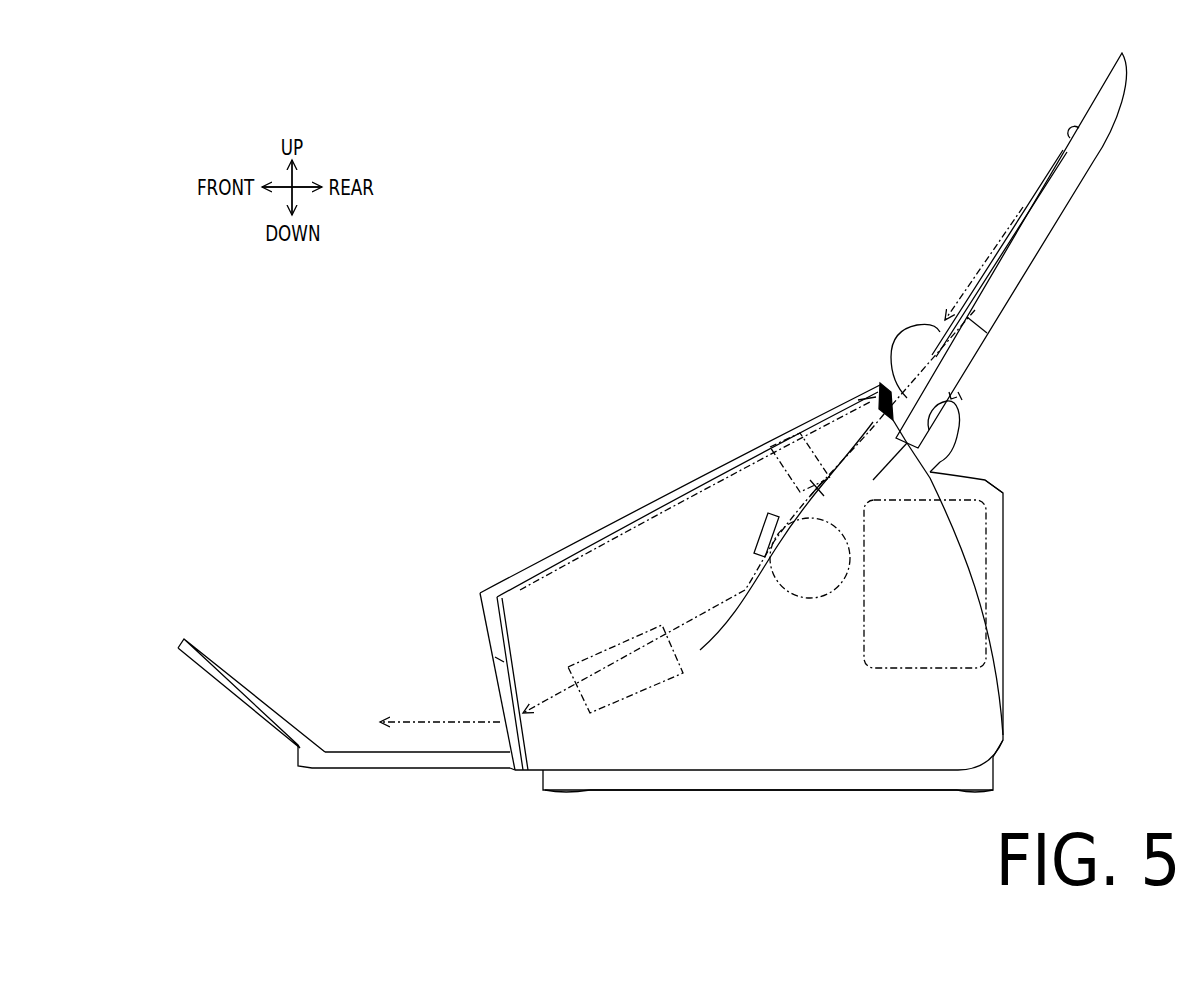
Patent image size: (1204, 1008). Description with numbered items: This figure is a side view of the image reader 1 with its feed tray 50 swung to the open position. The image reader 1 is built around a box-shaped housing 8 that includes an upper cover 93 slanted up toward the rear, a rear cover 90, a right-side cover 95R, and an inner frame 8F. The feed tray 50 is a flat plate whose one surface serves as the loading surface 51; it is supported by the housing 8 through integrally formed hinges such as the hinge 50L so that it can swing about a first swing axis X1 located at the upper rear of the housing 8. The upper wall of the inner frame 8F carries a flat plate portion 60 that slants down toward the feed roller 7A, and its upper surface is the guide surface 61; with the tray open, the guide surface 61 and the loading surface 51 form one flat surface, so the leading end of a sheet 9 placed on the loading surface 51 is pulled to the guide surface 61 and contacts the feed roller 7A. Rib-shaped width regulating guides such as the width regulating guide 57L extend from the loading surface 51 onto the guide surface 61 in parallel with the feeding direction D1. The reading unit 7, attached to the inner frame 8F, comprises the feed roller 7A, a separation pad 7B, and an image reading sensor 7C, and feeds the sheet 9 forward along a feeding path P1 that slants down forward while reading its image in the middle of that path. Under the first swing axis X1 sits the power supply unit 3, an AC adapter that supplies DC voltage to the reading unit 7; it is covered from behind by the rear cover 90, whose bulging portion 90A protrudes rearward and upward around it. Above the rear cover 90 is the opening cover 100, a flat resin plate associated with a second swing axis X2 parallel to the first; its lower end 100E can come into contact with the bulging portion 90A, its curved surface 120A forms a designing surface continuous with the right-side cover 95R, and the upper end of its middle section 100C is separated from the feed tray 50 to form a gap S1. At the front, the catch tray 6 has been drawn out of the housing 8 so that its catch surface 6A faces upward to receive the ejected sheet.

The image reader 1 is at (590, 195).
The power supply unit 3 is at (919, 628).
The catch tray 6 is at (400, 773).
The catch surface 6A is at (268, 705).
The reading unit 7 is at (646, 585).
The feed roller 7A is at (797, 572).
The separation pad 7B is at (722, 522).
The image reading sensor 7C is at (638, 688).
The housing 8 is at (1008, 742).
The inner frame 8F is at (758, 648).
The sheet 9 is at (1050, 118).
The feed tray 50 is at (1098, 165).
The hinge 50L is at (849, 273).
The loading surface 51 is at (1030, 160).
The width regulating guide 57L is at (908, 323).
The flat plate portion 60 is at (737, 403).
The guide surface 61 is at (780, 383).
The rear cover 90 is at (1010, 612).
The bulging portion 90A is at (987, 482).
The upper cover 93 is at (506, 503).
The right-side cover 95R is at (755, 735).
The opening cover 100 is at (952, 443).
The middle section 100C is at (962, 396).
The lower end 100E is at (935, 470).
The curved surface 120A is at (937, 428).
The first swing axis X1 is at (808, 333).
The second swing axis X2 is at (935, 427).
The feeding path P1 is at (528, 708).
The feeding direction D1 is at (984, 263).
The gap S1 is at (957, 385).